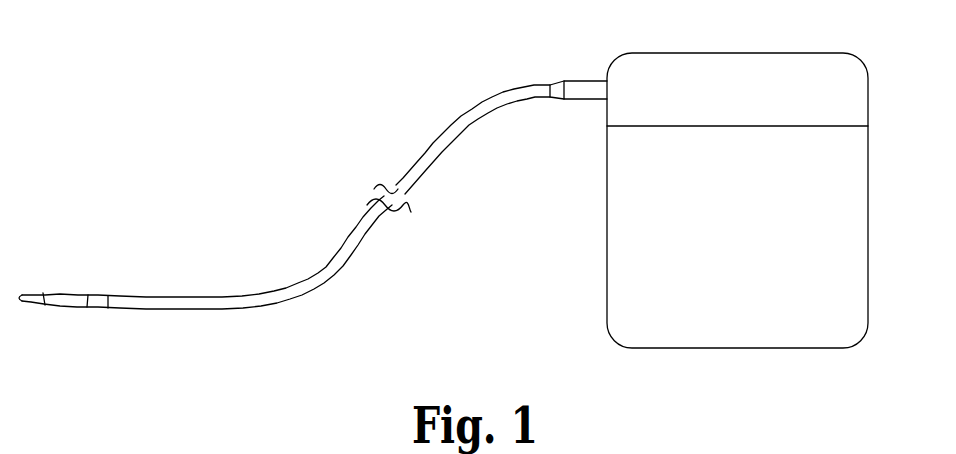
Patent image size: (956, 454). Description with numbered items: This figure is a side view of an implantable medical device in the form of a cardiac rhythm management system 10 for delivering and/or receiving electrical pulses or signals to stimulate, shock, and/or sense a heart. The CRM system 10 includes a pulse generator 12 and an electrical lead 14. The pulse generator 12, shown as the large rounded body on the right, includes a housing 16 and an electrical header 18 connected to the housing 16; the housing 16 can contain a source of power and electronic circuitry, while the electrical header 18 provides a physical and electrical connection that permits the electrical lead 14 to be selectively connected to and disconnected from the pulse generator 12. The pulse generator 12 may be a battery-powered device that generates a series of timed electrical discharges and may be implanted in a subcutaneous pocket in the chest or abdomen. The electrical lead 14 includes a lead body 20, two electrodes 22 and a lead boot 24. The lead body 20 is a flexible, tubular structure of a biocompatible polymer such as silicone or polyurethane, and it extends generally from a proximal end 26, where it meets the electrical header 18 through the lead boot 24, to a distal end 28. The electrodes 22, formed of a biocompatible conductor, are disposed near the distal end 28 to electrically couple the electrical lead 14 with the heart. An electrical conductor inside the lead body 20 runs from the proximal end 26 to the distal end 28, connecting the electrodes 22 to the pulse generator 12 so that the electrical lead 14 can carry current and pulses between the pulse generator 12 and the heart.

The cardiac rhythm management (CRM) system 10 is at (352, 102).
The pulse generator 12 is at (872, 168).
The electrical lead 14 is at (470, 110).
The housing 16 is at (858, 216).
The electrical header 18 is at (858, 81).
The lead body 20 is at (332, 288).
The electrode 22 is at (33, 292).
The lead boot 24 is at (570, 100).
The proximal end 26 is at (590, 81).
The distal end 28 is at (30, 306).